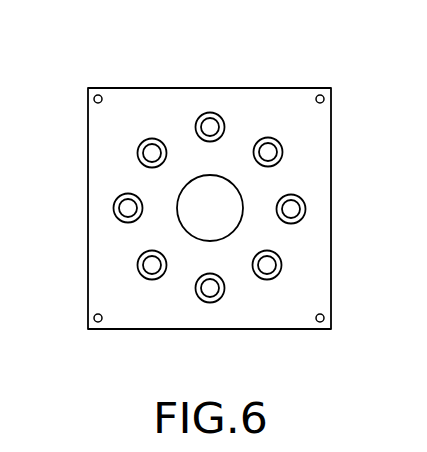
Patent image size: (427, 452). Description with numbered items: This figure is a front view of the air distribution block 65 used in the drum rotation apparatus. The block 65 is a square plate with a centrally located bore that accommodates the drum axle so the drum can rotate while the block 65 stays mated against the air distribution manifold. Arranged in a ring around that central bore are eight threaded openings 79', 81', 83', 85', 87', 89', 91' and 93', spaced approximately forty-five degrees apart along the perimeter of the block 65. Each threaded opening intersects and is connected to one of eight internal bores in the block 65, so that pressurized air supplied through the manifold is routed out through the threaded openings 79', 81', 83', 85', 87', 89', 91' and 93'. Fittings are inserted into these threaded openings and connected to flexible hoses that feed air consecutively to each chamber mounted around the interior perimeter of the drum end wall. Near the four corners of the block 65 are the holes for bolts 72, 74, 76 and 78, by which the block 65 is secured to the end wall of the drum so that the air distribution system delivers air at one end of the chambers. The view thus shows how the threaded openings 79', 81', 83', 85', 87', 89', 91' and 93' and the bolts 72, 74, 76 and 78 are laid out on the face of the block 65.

The air distribution block 65 is at (318, 128).
The bolt 72 is at (97, 88).
The bolt 74 is at (321, 95).
The bolt 76 is at (321, 320).
The bolt 78 is at (97, 320).
The threaded opening 79' is at (322, 150).
The threaded opening 81' is at (345, 214).
The threaded opening 83' is at (322, 275).
The threaded opening 85' is at (178, 326).
The threaded opening 87' is at (101, 274).
The threaded opening 89' is at (77, 211).
The threaded opening 91' is at (100, 150).
The threaded opening 93' is at (233, 76).